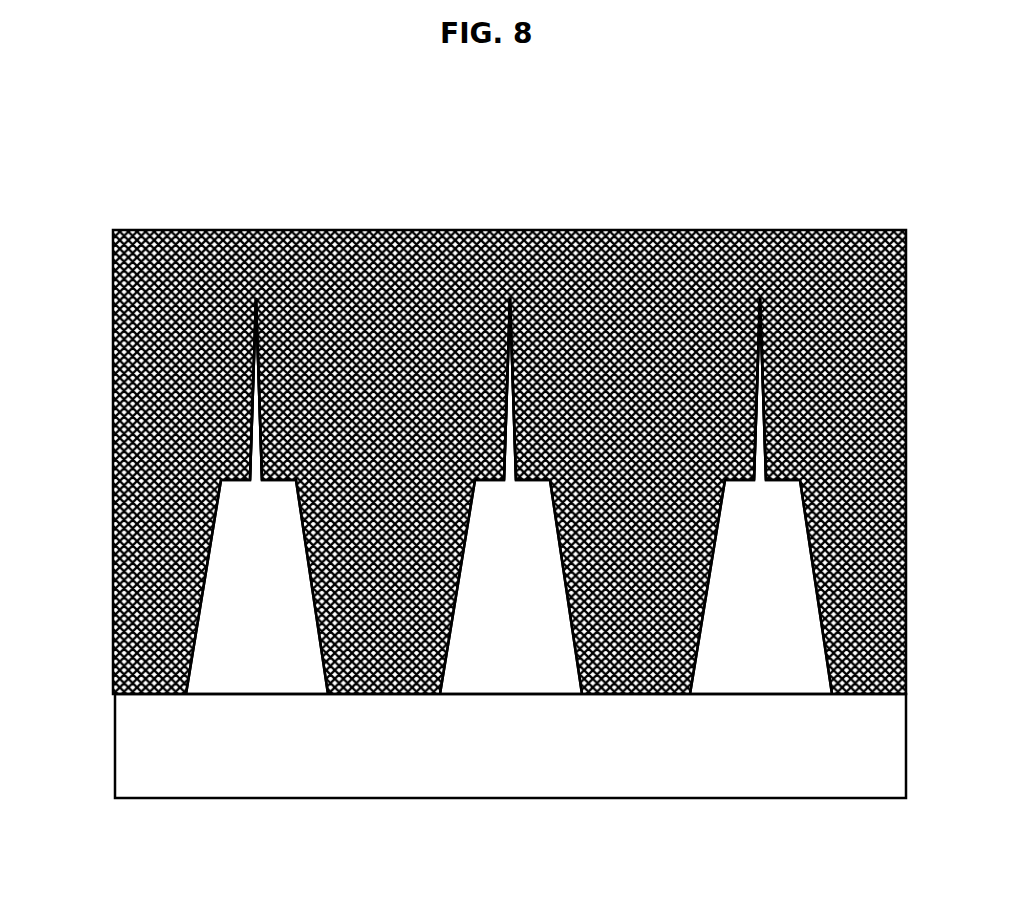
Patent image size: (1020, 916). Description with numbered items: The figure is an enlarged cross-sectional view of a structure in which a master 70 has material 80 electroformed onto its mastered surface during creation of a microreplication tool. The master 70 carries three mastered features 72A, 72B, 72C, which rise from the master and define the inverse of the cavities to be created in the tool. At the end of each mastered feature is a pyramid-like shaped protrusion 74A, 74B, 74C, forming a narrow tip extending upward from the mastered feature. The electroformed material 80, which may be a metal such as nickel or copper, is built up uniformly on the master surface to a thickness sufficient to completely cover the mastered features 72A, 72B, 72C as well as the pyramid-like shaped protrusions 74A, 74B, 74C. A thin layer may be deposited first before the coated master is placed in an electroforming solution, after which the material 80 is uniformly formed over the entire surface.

The master 70 is at (106, 742).
The mastered feature 72A is at (250, 580).
The mastered feature 72B is at (503, 585).
The mastered feature 72C is at (755, 585).
The pyramid-like shaped protrusion 74A is at (251, 380).
The pyramid-like shaped protrusion 74B is at (506, 385).
The pyramid-like shaped protrusion 74C is at (750, 392).
The electroformed material 80 is at (123, 456).